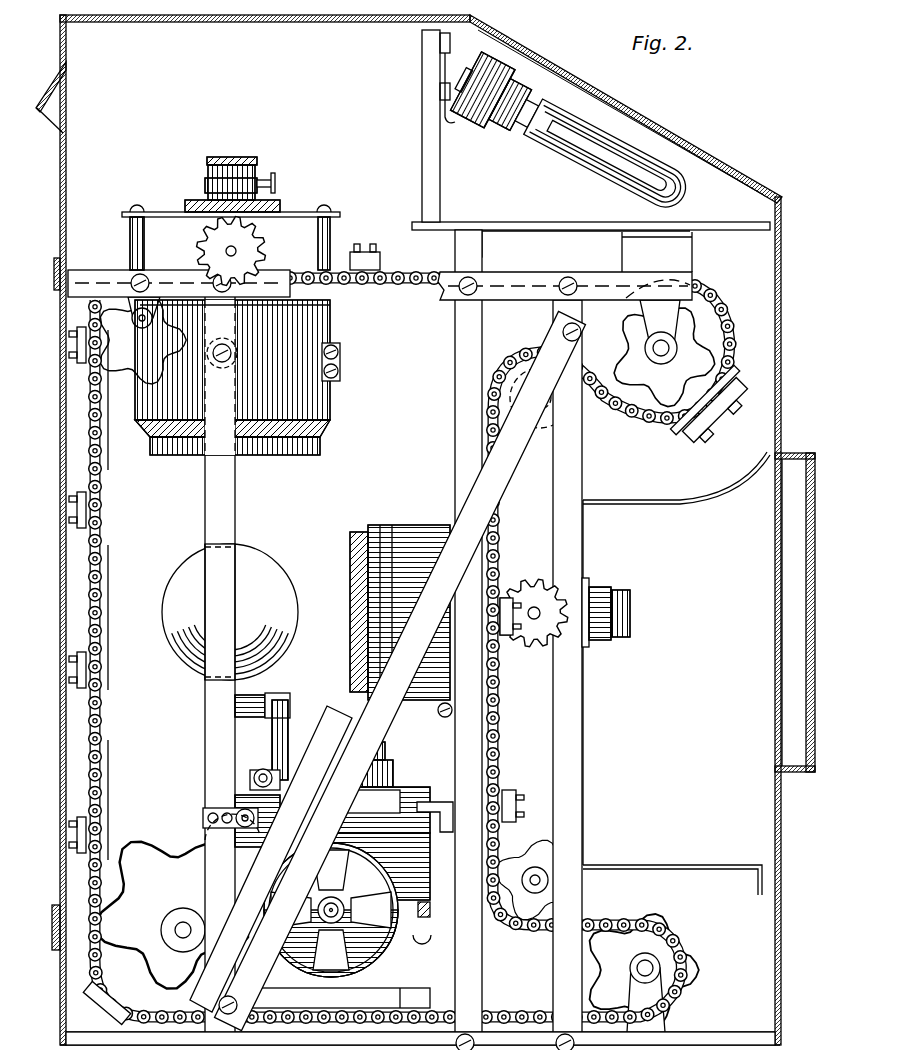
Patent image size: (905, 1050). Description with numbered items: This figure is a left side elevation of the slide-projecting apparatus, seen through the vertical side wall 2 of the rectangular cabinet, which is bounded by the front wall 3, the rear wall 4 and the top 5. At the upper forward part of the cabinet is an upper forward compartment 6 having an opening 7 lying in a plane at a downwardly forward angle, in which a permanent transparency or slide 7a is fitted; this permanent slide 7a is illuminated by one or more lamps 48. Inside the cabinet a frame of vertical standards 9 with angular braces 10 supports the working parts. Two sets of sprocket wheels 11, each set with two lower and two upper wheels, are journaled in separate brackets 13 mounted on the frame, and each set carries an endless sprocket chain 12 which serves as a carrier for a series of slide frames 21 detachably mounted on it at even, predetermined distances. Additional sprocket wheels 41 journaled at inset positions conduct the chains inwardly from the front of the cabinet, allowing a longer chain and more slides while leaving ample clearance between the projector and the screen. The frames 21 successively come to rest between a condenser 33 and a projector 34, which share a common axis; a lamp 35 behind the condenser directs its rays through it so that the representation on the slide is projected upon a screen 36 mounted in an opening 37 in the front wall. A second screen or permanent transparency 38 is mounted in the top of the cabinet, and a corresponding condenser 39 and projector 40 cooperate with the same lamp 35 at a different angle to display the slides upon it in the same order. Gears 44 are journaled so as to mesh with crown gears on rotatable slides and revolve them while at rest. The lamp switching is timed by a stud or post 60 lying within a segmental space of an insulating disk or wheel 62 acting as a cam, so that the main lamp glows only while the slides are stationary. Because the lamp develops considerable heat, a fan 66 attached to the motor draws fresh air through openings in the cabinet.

The vertical side wall 2 is at (255, 377).
The front wall 3 is at (747, 287).
The rear wall 4 is at (58, 882).
The top 5 is at (479, 73).
The upper forward compartment 6 is at (591, 130).
The opening 7 is at (743, 182).
The permanent transparency or slide 7a is at (648, 122).
The vertical standard 9 is at (217, 493).
The angular brace 10 is at (370, 707).
The sprocket wheel 11 is at (403, 661).
The endless sprocket chain 12 is at (102, 765).
The bracket 13 is at (135, 298).
The slide frame 21 is at (382, 288).
The condenser 33 is at (410, 545).
The projector 34 is at (610, 592).
The lamp 35 is at (245, 575).
The screen 36 is at (780, 575).
The opening 37 is at (778, 655).
The screen or permanent transparency 38 is at (250, 20).
The condenser 39 is at (295, 420).
The projector 40 is at (208, 170).
The additional sprocket wheel 41 is at (552, 418).
The gear 44 is at (252, 253).
The lamp 48 is at (624, 126).
The stud or post 60 is at (262, 770).
The disk or wheel 62 is at (245, 850).
The fan 66 is at (390, 942).